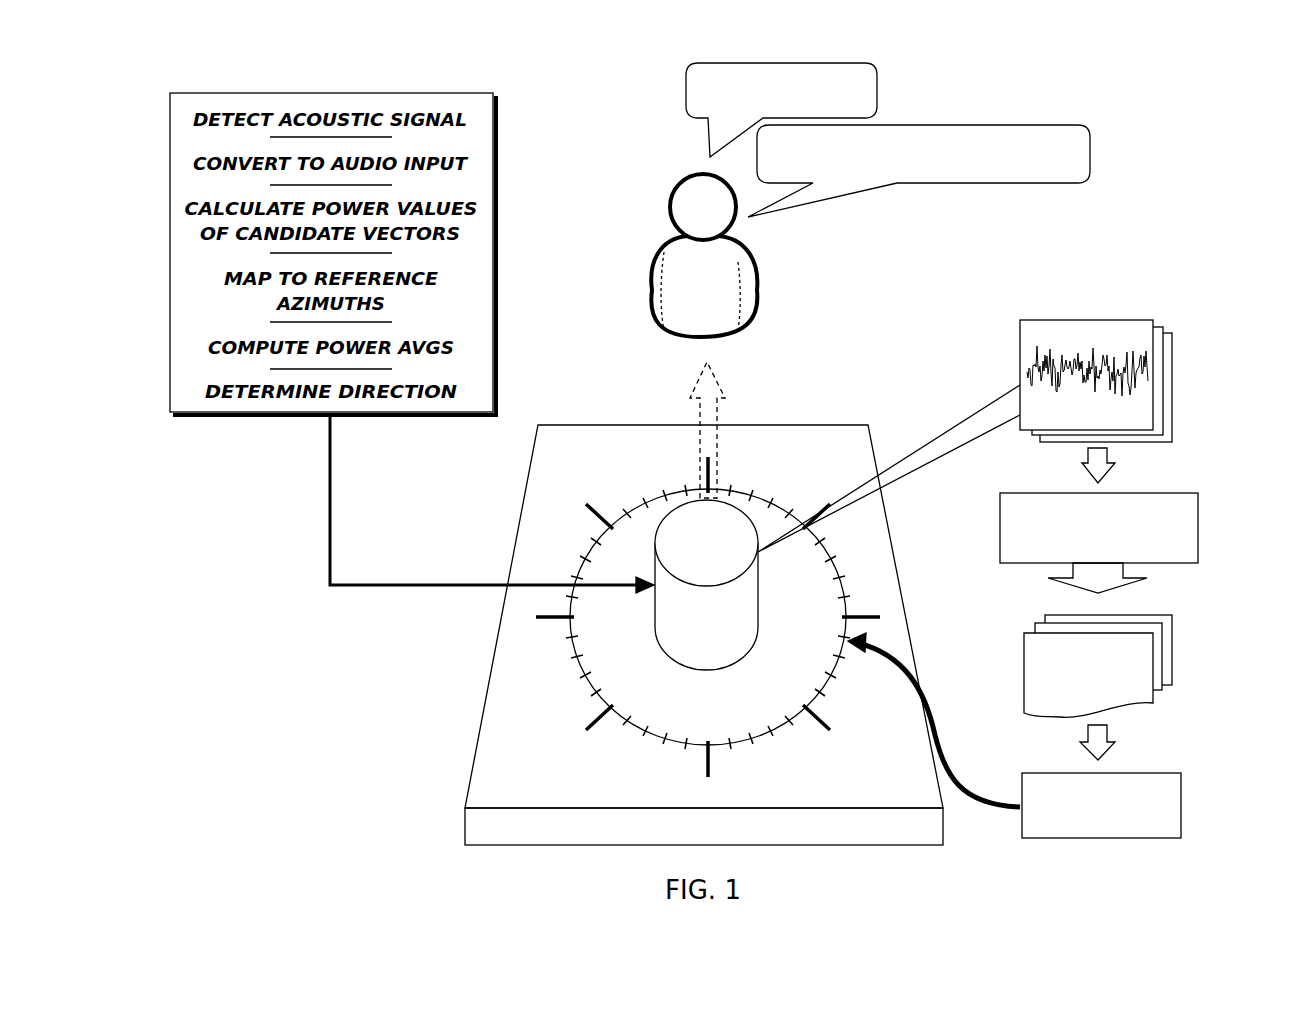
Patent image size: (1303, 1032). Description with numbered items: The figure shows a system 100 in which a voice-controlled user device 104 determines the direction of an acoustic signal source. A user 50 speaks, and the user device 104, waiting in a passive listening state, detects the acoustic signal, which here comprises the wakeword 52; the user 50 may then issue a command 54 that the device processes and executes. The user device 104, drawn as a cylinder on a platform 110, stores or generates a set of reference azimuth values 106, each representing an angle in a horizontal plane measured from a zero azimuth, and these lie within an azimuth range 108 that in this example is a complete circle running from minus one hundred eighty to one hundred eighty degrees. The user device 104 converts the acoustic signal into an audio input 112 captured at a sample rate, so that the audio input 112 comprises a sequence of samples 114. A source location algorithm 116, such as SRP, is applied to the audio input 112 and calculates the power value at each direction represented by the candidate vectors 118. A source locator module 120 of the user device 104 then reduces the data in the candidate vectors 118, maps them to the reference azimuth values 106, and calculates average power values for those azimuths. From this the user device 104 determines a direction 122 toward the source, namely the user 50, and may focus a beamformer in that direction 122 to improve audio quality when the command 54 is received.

The user 50 is at (758, 273).
The wakeword 52 is at (686, 83).
The command 54 is at (933, 122).
The system 100 is at (1078, 243).
The user device 104 is at (653, 612).
The reference azimuth values 106 is at (800, 493).
The azimuth range 108 is at (662, 483).
The platform 110 is at (478, 752).
The audio input 112 is at (1143, 310).
The samples 114 is at (1172, 407).
The source location algorithm 116 is at (1158, 493).
The candidate vectors 118 is at (1163, 603).
The source locator module 120 is at (1145, 773).
The direction 122 is at (700, 385).